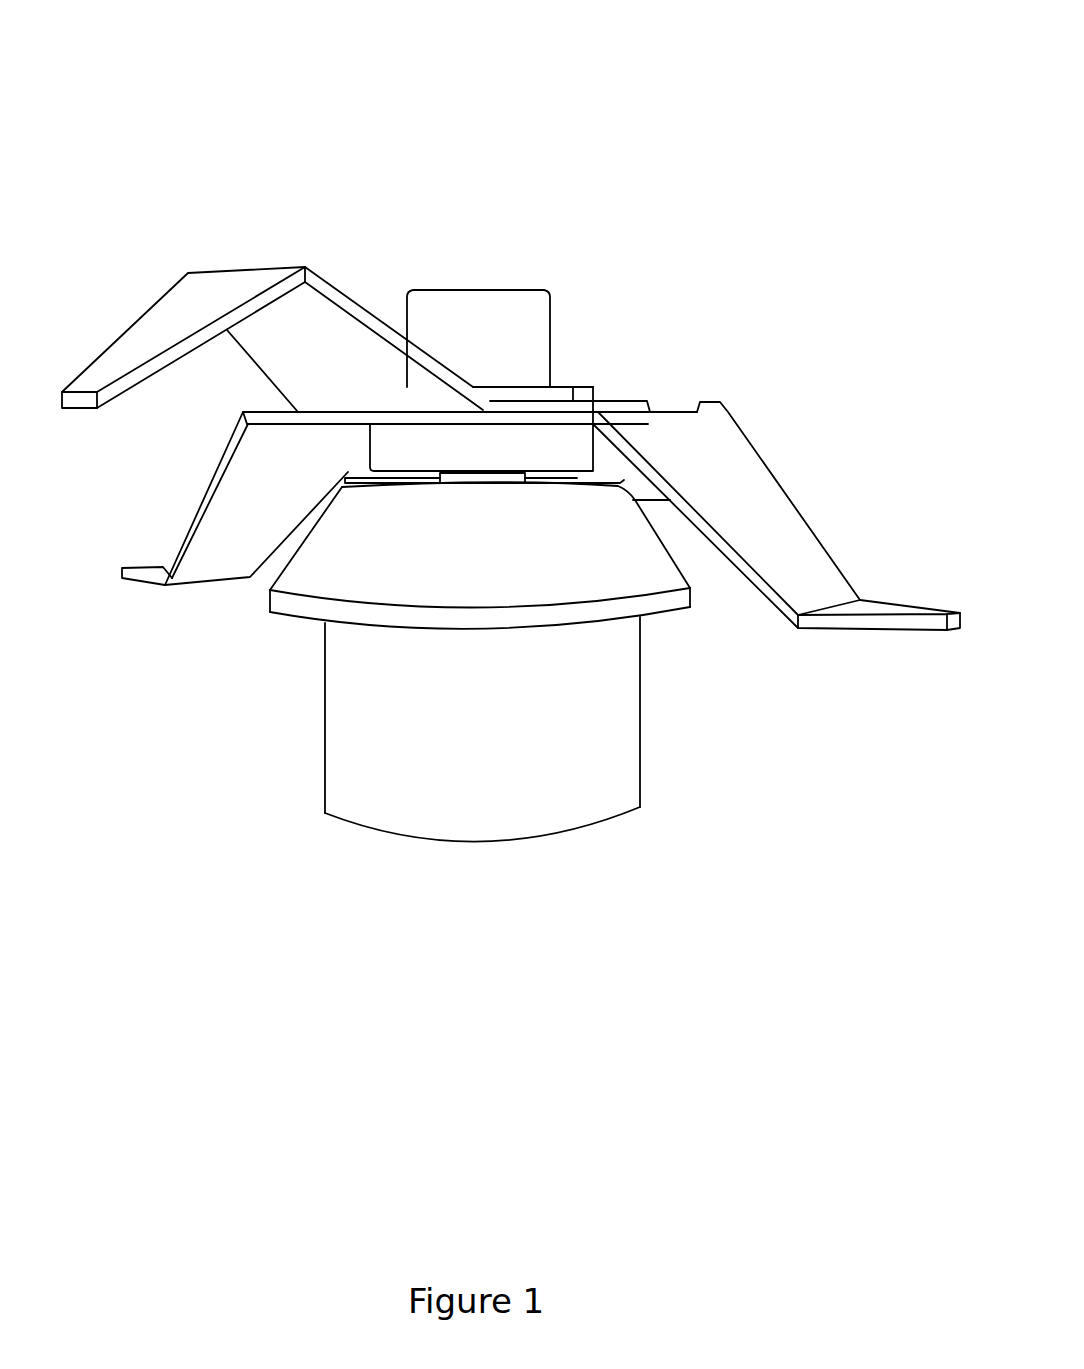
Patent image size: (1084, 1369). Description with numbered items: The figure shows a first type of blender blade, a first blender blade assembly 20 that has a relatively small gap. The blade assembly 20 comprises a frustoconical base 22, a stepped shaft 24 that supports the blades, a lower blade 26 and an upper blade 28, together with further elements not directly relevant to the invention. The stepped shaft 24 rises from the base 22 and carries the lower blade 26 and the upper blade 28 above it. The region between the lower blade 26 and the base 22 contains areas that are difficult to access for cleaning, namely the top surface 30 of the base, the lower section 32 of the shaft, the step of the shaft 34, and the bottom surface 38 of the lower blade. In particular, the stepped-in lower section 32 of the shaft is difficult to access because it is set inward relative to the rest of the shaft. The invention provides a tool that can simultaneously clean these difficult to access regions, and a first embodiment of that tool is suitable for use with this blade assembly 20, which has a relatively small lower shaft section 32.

The first blender blade assembly 20 is at (136, 109).
The frustoconical base 22 is at (298, 575).
The stepped shaft 24 is at (543, 453).
The lower blade 26 is at (770, 547).
The upper blade 28 is at (158, 325).
The top surface of the base 30 is at (577, 480).
The lower section of the shaft 32 is at (593, 453).
The step of the shaft 34 is at (380, 474).
The bottom surface of the lower blade 38 is at (492, 427).